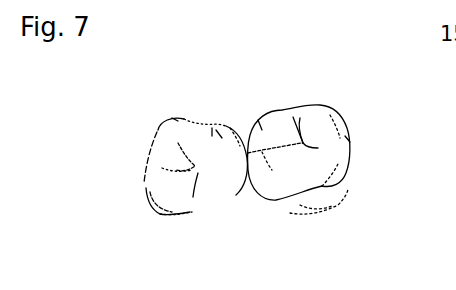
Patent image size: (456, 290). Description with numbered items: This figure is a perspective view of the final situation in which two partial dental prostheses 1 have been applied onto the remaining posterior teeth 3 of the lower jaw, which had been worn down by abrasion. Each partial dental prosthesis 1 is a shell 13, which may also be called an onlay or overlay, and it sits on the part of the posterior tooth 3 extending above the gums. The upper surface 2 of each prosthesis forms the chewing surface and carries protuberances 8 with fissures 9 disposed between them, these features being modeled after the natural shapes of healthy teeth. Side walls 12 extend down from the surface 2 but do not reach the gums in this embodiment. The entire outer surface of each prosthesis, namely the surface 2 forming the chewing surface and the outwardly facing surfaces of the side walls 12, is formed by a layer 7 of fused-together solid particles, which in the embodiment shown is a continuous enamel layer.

The partial dental prosthesis 1 is at (157, 115).
The surface forming the chewing surface 2 is at (224, 130).
The posterior tooth 3 is at (323, 200).
The layer 7 is at (236, 128).
The protuberance 8 is at (168, 162).
The fissure 9 is at (219, 135).
The side wall 12 is at (192, 199).
The shell 13 is at (175, 118).